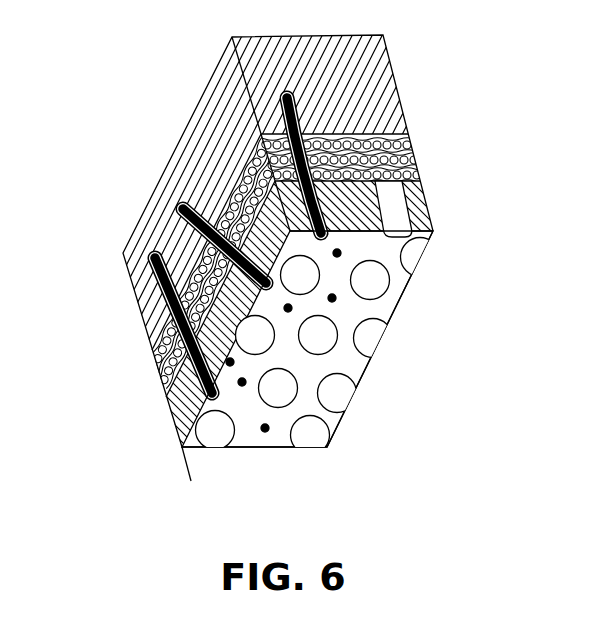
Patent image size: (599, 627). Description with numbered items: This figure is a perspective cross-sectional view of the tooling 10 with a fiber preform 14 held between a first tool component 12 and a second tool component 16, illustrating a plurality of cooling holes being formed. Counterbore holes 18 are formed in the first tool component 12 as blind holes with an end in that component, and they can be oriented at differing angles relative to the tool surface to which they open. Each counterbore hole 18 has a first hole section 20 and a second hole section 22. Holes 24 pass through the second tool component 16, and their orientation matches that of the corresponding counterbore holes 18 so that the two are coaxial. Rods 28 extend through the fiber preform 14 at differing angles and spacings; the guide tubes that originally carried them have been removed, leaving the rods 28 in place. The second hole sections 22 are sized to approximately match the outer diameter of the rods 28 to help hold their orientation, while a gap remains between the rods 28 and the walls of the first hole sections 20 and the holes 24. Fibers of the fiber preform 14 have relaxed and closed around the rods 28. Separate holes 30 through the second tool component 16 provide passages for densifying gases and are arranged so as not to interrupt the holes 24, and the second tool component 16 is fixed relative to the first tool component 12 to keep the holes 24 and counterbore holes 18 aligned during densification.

The composite structure 10 is at (504, 142).
The first tool component 12 is at (158, 221).
The fiber preform 14 is at (412, 161).
The second tool component 16 is at (303, 369).
The counterbore holes 18 is at (299, 297).
The first hole section 20 is at (79, 305).
The second hole section 22 is at (148, 258).
The holes 24 is at (303, 203).
The rods 28 is at (265, 431).
The holes 30 is at (373, 328).